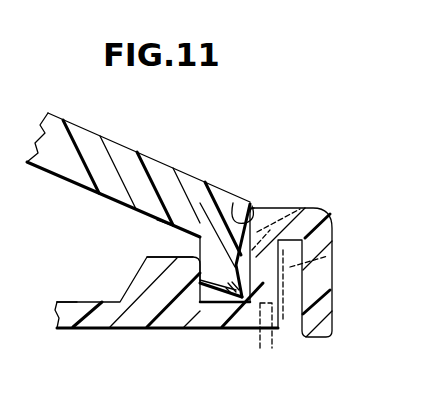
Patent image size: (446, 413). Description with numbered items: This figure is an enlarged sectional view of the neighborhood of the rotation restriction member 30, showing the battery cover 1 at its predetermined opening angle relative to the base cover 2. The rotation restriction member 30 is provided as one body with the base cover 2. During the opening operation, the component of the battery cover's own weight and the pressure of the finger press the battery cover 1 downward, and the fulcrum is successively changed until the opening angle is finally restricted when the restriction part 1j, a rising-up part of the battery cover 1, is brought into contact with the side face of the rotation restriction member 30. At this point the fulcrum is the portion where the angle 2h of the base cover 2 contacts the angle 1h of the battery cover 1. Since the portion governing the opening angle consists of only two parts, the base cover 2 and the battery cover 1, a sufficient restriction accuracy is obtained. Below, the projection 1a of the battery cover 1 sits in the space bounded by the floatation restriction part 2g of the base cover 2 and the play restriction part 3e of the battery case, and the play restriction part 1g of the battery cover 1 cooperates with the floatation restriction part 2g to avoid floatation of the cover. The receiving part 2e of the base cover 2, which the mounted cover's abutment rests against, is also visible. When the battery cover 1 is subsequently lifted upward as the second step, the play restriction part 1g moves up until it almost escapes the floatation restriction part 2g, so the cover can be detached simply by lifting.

The battery cover 1 is at (118, 145).
The projection 1a is at (235, 283).
The angle 1h is at (233, 203).
The restriction part 1j is at (213, 287).
The play restriction part 1g is at (270, 345).
The base cover 2 is at (318, 243).
The receiving part 2e is at (77, 298).
The floatation restriction part 2g is at (298, 212).
The angle 2h is at (263, 222).
The play restriction part 3e is at (326, 260).
The rotation restriction member 30 is at (143, 268).